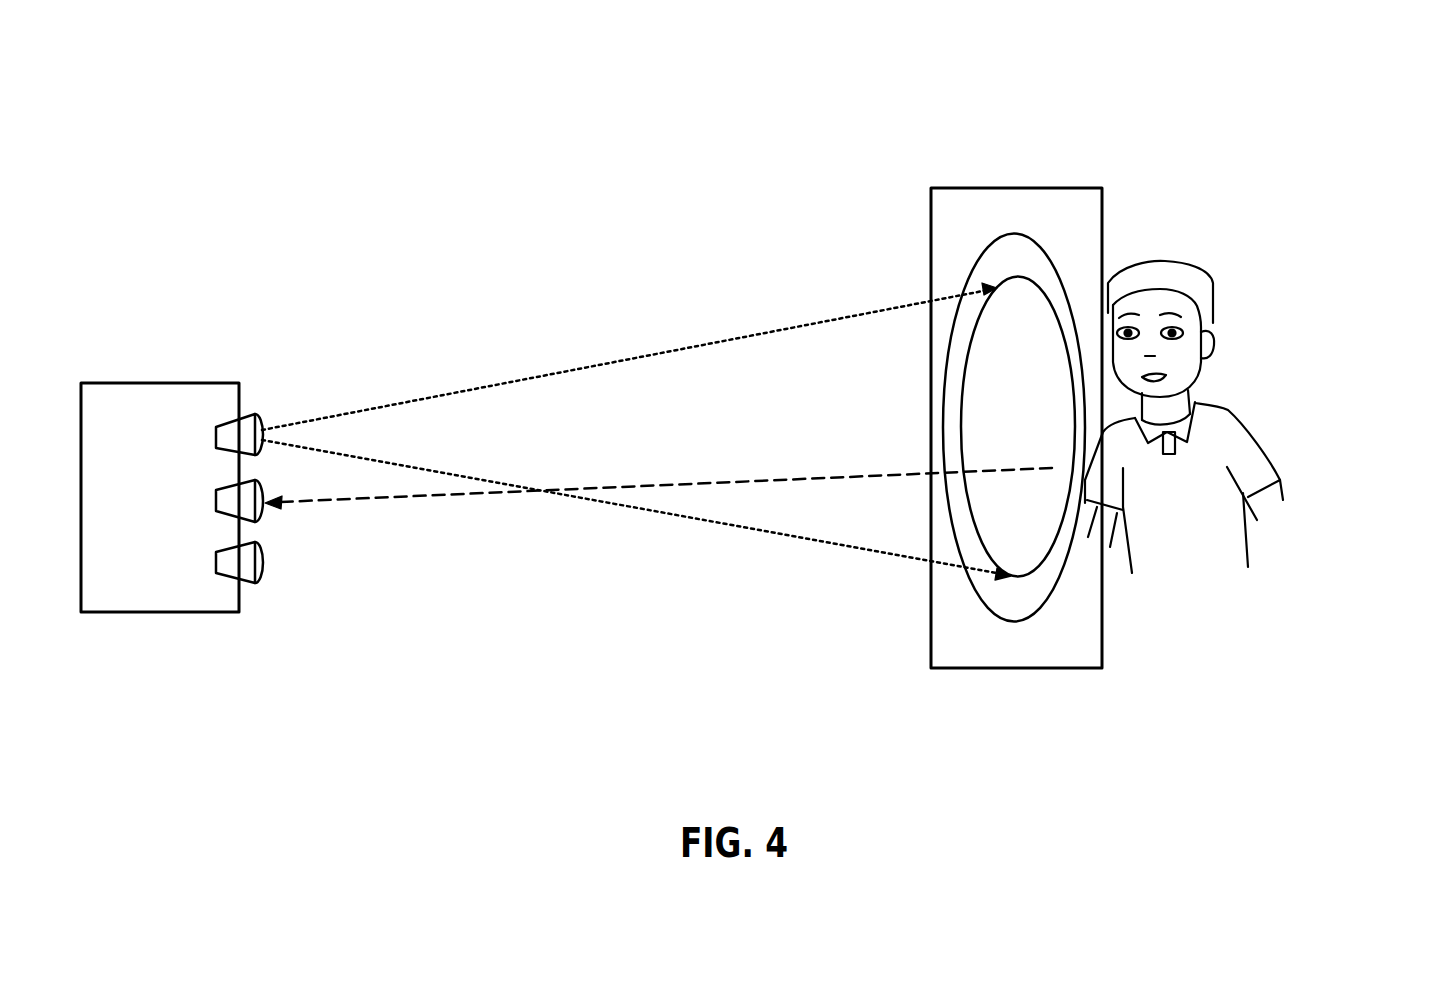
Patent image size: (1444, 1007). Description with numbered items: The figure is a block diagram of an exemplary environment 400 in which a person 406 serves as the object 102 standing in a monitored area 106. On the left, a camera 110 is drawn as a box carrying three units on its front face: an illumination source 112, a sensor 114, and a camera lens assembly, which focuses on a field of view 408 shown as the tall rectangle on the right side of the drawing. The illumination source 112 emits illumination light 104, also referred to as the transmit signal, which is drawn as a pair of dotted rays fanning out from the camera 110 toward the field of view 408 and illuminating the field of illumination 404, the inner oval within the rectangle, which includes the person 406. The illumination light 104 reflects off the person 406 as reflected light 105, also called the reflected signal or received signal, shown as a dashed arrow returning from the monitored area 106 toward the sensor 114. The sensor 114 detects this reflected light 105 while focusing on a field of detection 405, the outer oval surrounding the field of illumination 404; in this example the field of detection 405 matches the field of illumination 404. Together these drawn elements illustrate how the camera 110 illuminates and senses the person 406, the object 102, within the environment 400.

The environment 400 is at (328, 92).
The camera 110 is at (260, 509).
The illumination source 112 is at (310, 737).
The sensor 114 is at (256, 521).
The illumination light 104 is at (722, 340).
The reflected light 105 is at (483, 493).
The field of view 408 is at (931, 205).
The field of illumination 404 is at (1017, 272).
The field of detection 405 is at (1052, 262).
The object 102 is at (1219, 417).
The person 406 is at (1227, 311).
The monitored area 106 is at (1110, 340).